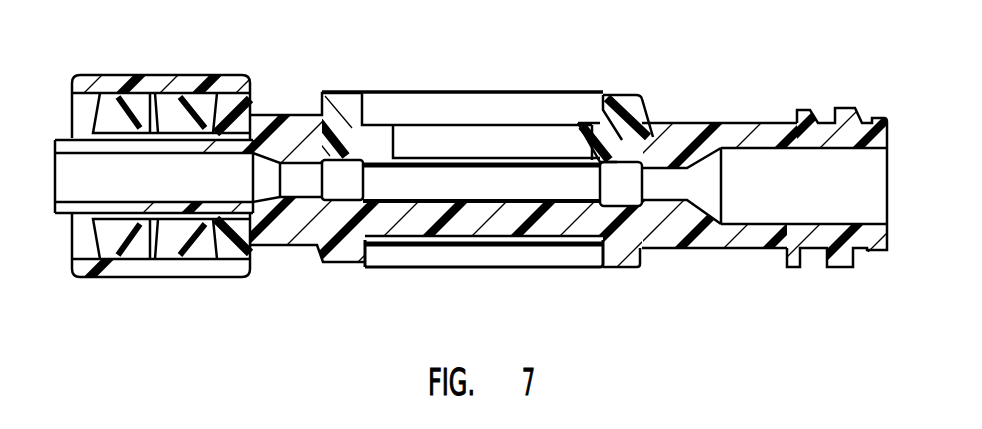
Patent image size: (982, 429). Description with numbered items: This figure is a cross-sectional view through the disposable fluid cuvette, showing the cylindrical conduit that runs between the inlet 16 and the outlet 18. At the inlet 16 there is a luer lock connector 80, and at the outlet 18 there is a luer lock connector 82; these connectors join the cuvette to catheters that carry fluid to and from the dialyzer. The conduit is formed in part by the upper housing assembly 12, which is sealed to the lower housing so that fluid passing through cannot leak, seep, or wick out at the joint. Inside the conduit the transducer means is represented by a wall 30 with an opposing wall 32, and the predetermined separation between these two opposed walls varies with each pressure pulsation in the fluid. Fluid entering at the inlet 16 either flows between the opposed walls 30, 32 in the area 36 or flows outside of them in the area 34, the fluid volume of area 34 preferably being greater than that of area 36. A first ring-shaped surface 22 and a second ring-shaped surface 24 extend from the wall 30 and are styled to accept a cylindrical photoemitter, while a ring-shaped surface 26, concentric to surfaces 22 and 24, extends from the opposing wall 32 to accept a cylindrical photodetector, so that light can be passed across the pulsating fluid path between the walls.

The upper housing assembly 12 is at (340, 108).
The inlet 16 is at (275, 246).
The outlet 18 is at (710, 248).
The first ring-shaped surface 22 is at (597, 112).
The second ring-shaped surface 24 is at (618, 183).
The ring-shaped surface 26 is at (625, 268).
The wall 30 is at (448, 160).
The opposing wall 32 is at (458, 246).
The area 34 is at (645, 130).
The area 36 is at (400, 183).
The luer lock connector 80 is at (117, 74).
The luer lock connector 82 is at (843, 110).